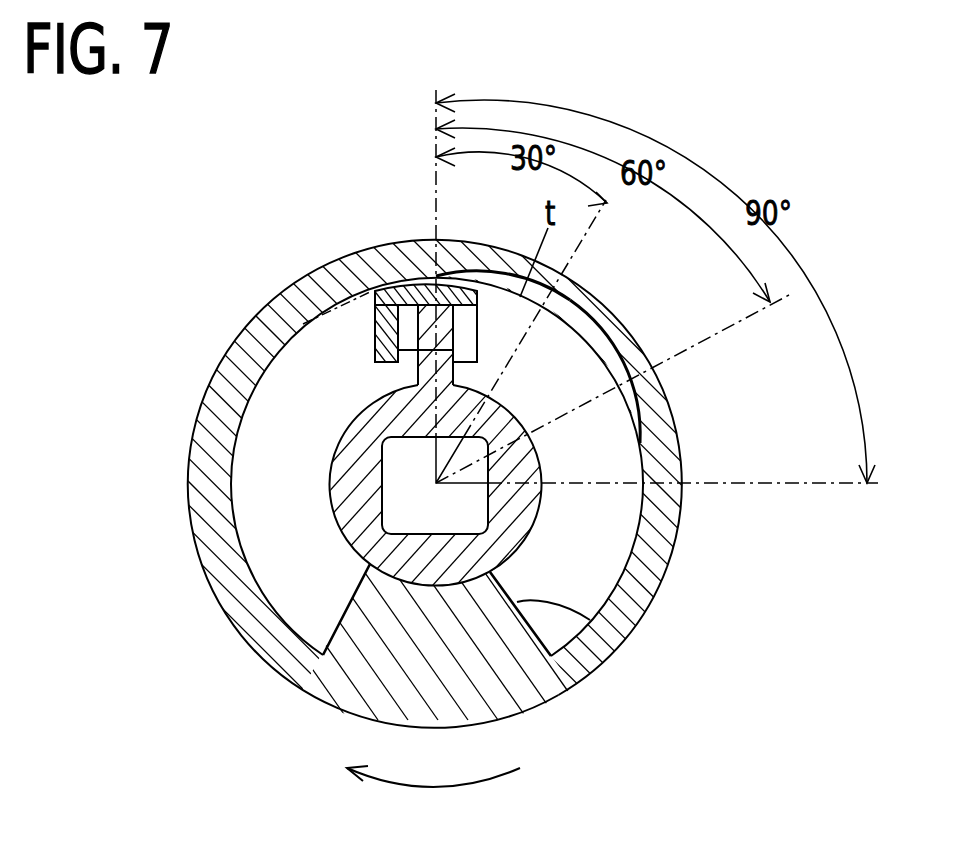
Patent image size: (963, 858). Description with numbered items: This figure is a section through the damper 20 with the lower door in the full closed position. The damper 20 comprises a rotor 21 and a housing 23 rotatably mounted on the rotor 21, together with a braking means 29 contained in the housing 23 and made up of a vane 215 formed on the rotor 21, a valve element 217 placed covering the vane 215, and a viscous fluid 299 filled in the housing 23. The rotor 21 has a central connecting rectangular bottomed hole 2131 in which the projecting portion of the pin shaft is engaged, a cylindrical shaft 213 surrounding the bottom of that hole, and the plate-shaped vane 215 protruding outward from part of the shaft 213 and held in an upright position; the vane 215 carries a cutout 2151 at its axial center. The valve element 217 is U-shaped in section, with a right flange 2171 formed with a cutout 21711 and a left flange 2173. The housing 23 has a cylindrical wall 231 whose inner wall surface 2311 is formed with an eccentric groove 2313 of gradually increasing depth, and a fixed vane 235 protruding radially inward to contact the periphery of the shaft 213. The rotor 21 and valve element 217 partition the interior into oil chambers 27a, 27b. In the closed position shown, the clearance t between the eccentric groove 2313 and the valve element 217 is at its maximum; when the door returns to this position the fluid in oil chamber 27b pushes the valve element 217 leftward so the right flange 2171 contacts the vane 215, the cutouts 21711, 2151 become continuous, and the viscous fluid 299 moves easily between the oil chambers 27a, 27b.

The damper 20 is at (280, 293).
The rotor 21 is at (372, 548).
The cylindrical shaft 213 is at (335, 498).
The connecting rectangular bottomed hole 2131 is at (370, 564).
The vane 215 is at (382, 262).
The braking means 29 is at (362, 288).
The cutout 2151 is at (433, 305).
The valve element 217 is at (334, 242).
The right flange 2171 is at (580, 306).
The cutout 21711 is at (556, 293).
The left flange 2173 is at (376, 358).
The housing 23 is at (193, 413).
The cylindrical wall 231 is at (223, 352).
The inner wall surface 2311 is at (630, 436).
The eccentric groove 2313 is at (524, 292).
The fixed vane 235 is at (613, 657).
The oil chamber 27a is at (285, 533).
The oil chamber 27b is at (598, 527).
The viscous fluid 299 is at (572, 572).